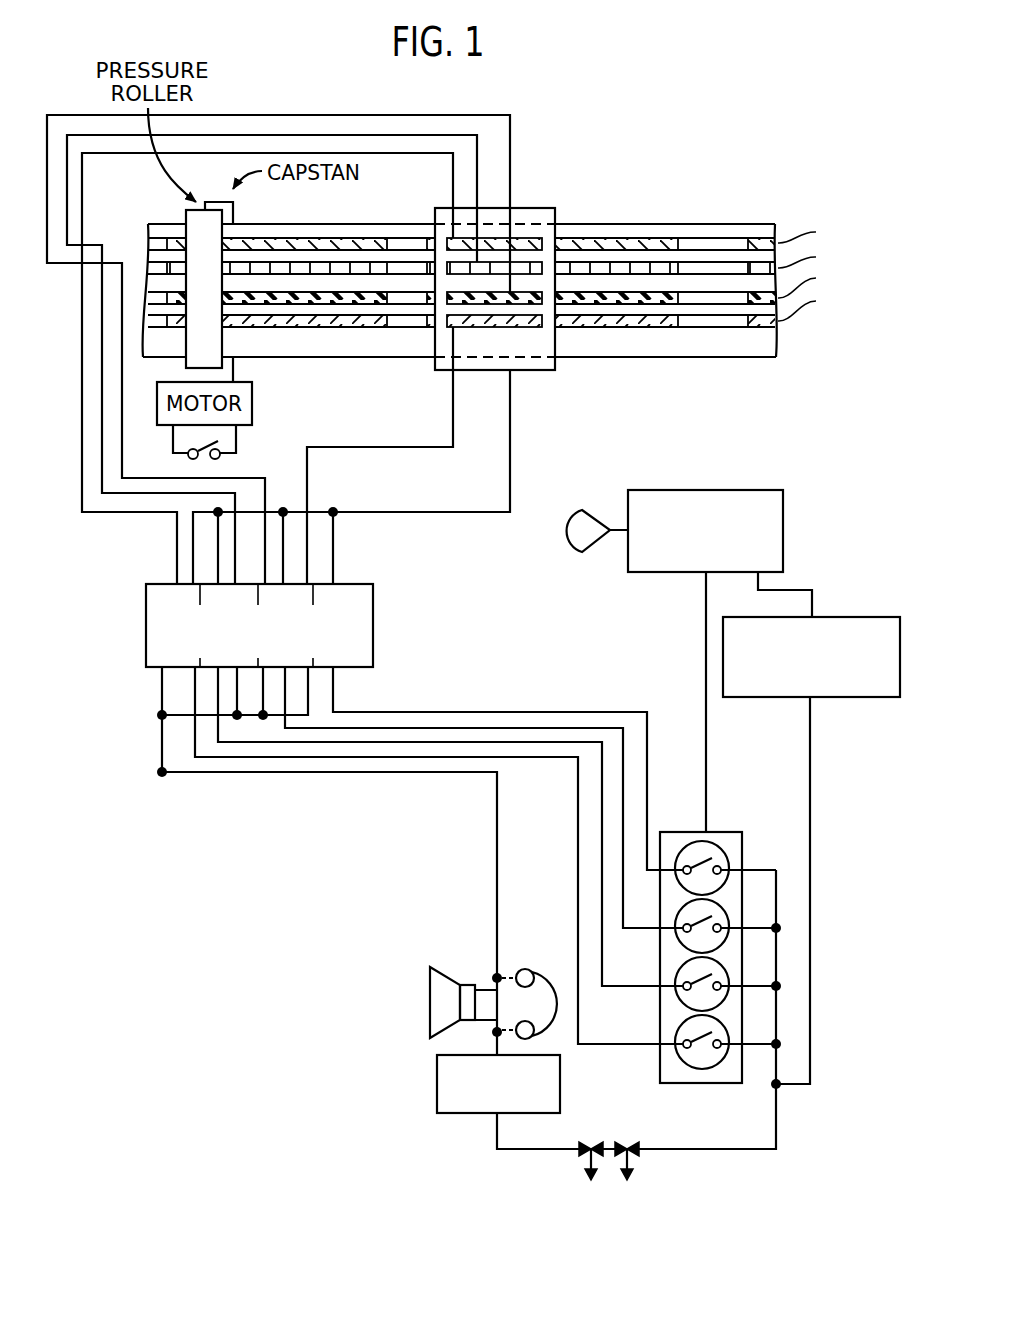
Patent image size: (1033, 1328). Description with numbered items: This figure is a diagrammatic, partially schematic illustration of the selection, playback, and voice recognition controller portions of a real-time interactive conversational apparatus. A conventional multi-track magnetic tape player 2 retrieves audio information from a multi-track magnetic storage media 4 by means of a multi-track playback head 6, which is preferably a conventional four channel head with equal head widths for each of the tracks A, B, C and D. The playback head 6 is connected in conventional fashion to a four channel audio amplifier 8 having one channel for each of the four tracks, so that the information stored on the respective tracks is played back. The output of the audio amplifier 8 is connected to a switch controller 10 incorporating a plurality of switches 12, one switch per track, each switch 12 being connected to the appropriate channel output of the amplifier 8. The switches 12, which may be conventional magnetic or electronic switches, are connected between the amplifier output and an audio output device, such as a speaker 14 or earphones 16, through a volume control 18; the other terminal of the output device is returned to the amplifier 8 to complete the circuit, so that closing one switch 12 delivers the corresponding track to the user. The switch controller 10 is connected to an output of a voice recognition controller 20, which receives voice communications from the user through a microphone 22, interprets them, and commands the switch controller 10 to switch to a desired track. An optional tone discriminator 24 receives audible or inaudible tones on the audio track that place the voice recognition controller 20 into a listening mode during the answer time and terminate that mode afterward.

The multi-track magnetic tape player 2 is at (637, 179).
The multi-track magnetic storage media 4 is at (660, 367).
The multi-track playback head 6 is at (527, 207).
The four channel audio amplifier 8 is at (362, 642).
The switch controller 10 is at (720, 832).
The switch 12 is at (716, 860).
The speaker 14 is at (425, 1033).
The earphones 16 is at (529, 976).
The volume control 18 is at (560, 1077).
The voice recognition controller 20 is at (705, 531).
The microphone 22 is at (582, 552).
The tone discriminator 24 is at (811, 657).